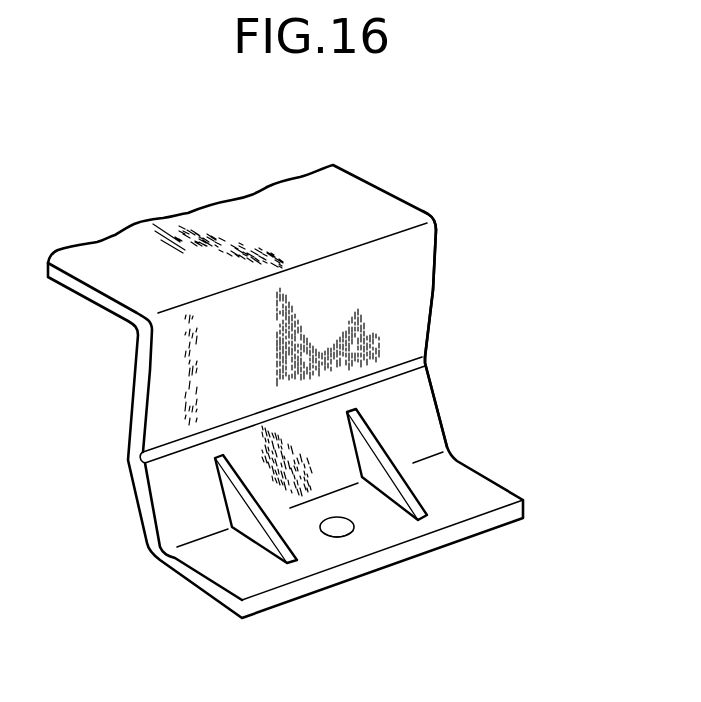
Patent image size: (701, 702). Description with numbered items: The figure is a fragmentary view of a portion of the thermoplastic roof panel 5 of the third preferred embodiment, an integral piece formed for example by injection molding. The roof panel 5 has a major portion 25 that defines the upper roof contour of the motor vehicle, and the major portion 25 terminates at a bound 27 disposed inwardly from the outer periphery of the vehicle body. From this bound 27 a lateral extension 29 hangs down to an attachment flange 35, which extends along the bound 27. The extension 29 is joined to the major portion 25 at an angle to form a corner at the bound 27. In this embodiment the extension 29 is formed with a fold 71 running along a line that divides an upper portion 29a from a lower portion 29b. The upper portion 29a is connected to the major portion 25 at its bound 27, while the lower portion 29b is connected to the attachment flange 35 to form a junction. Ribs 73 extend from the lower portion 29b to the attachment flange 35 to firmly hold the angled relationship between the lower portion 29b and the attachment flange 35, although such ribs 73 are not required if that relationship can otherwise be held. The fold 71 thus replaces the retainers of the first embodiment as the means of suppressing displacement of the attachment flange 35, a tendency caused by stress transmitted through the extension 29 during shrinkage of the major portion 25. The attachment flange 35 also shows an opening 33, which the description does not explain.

The roof panel 5 is at (278, 198).
The major portion 25 is at (375, 203).
The bound 27 is at (437, 222).
The lateral extension 29 is at (435, 302).
The upper portion 29a is at (420, 264).
The lower portion 29b is at (433, 390).
The fold 71 is at (410, 362).
The ribs 73 is at (378, 450).
The attachment flange 35 is at (484, 492).
The through hole 33 is at (337, 538).